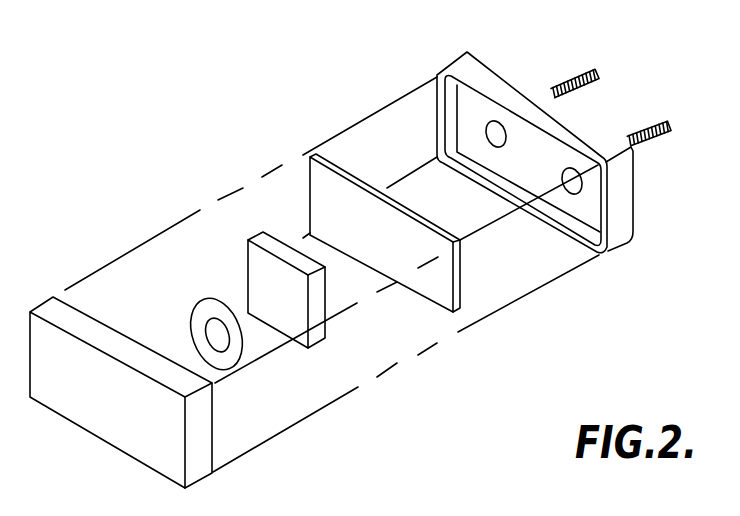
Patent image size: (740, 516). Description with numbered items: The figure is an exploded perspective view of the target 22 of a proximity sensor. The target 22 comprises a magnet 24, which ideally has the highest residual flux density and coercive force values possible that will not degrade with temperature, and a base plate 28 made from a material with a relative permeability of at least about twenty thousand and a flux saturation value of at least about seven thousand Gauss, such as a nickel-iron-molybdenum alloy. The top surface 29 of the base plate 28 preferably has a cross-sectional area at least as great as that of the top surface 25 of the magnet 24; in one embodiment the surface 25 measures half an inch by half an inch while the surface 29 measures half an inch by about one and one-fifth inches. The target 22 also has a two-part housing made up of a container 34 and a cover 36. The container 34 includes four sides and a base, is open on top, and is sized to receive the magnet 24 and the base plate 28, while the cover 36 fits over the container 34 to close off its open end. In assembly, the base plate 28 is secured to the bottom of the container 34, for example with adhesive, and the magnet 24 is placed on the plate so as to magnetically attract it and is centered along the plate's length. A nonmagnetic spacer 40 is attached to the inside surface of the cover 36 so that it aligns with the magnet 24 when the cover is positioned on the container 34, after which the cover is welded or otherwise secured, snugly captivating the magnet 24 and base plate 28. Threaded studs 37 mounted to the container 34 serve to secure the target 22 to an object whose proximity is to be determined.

The target 22 is at (150, 141).
The magnet 24 is at (318, 295).
The top surface of magnet 25 is at (291, 308).
The base plate 28 is at (430, 245).
The top surface of base plate 29 is at (393, 251).
The container 34 is at (623, 195).
The cover 36 is at (202, 443).
The threaded studs 37 is at (589, 72).
The spacer 40 is at (197, 313).